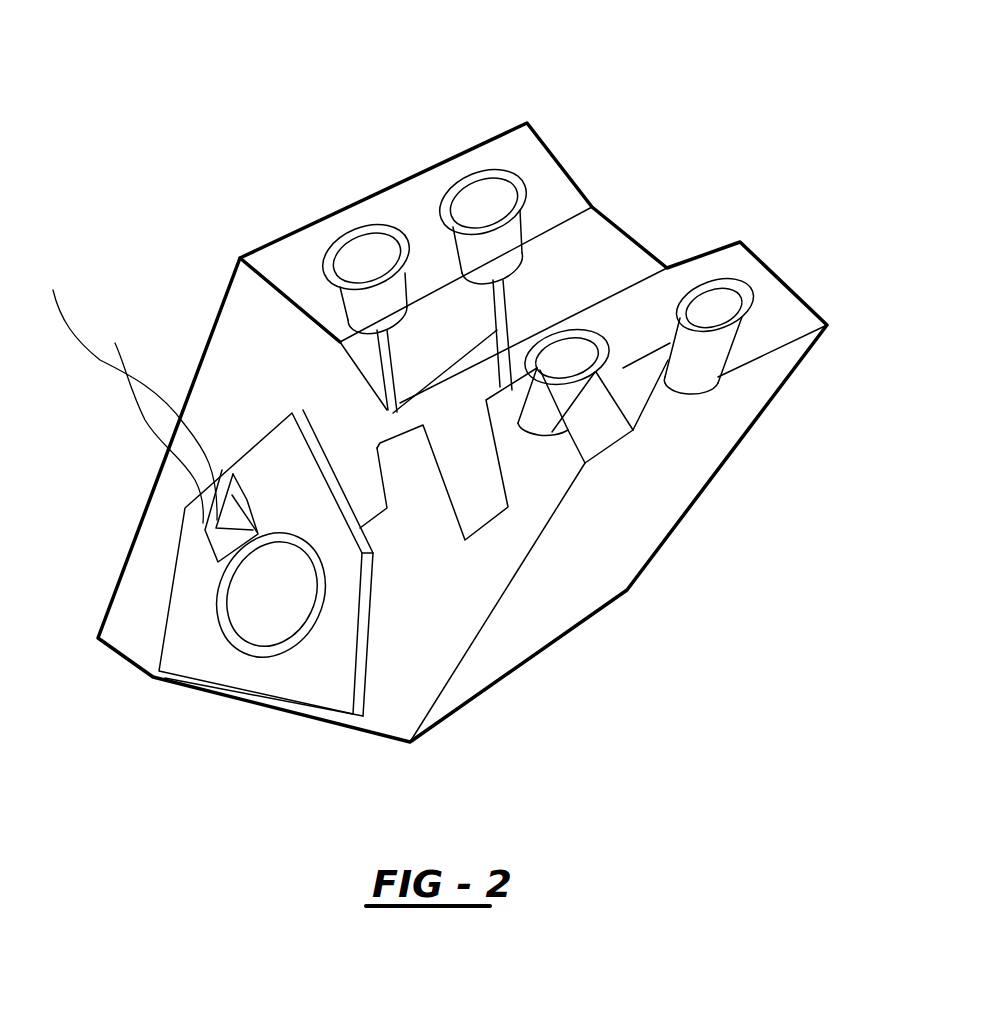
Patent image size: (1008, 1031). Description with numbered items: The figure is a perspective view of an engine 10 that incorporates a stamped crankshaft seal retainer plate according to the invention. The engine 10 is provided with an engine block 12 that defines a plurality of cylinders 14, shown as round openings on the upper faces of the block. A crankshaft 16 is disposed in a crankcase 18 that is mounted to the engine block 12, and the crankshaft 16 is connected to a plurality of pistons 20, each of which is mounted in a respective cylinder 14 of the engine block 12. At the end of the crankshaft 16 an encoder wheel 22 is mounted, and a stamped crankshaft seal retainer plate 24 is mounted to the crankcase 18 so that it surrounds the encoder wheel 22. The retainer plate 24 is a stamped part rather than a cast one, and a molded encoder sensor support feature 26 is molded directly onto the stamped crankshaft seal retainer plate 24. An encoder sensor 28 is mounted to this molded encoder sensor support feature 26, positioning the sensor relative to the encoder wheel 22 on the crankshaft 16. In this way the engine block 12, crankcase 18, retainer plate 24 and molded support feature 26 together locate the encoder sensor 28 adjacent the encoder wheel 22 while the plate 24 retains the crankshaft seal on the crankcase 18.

The engine 10 is at (648, 175).
The engine block 12 is at (361, 198).
The cylinders 14 is at (385, 225).
The crankshaft 16 is at (290, 580).
The crankcase 18 is at (452, 672).
The pistons 20 is at (357, 255).
The encoder wheel 22 is at (248, 628).
The stamped crankshaft seal retainer plate 24 is at (182, 612).
The molded encoder sensor support feature 26 is at (213, 555).
The encoder sensor 28 is at (217, 510).